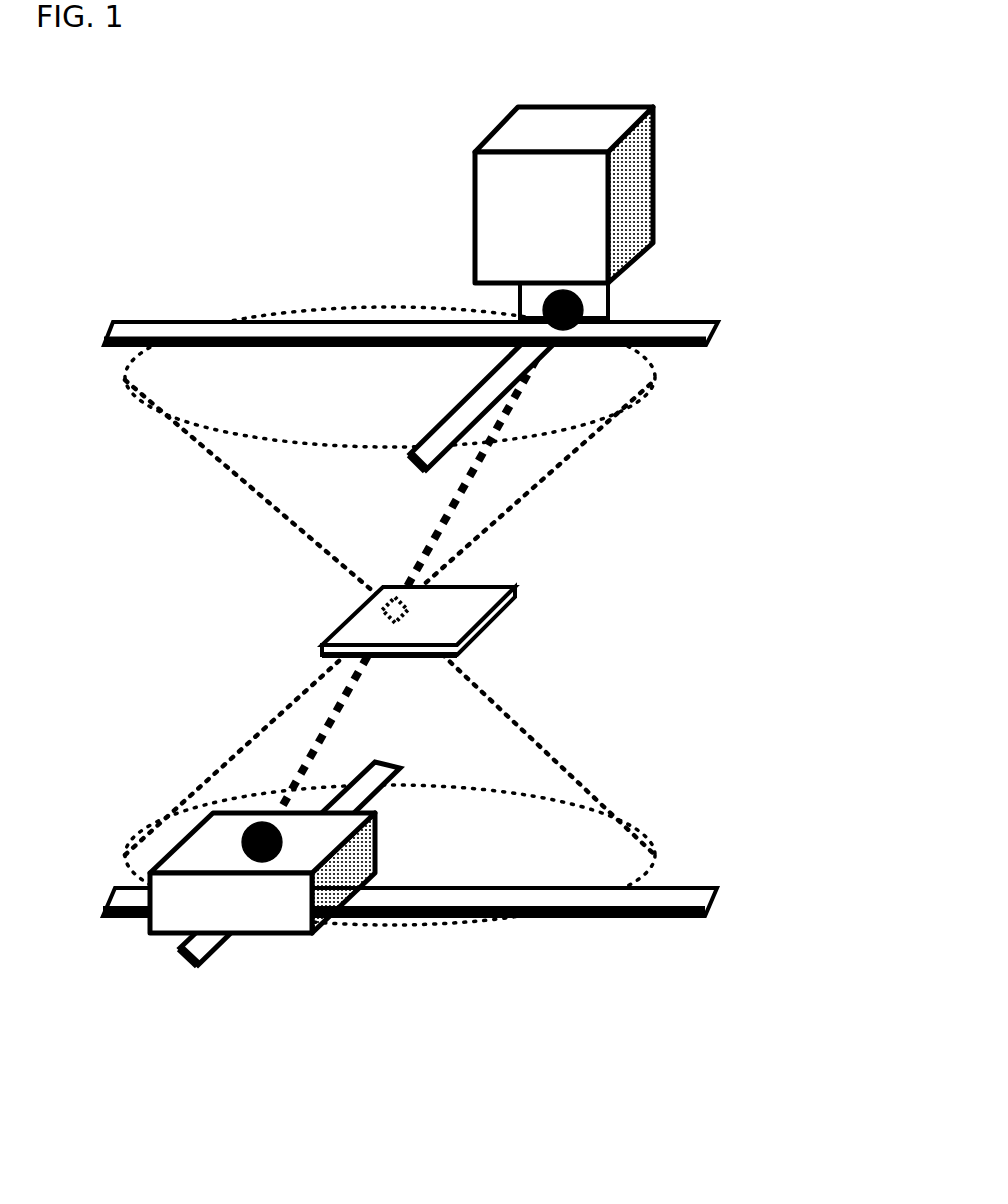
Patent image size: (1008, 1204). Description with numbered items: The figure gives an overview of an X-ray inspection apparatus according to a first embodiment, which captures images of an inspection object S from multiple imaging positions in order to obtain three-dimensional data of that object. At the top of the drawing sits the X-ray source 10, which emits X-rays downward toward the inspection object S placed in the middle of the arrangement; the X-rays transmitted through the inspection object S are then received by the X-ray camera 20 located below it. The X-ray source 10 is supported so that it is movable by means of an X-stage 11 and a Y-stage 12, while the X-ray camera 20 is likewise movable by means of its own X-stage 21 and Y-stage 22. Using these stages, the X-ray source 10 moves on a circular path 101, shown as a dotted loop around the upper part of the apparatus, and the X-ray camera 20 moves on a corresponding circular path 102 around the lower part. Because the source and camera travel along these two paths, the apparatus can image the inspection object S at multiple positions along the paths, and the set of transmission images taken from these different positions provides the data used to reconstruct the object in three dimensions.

The X-ray source 10 is at (663, 188).
The X-stage 11 is at (715, 323).
The Y-stage 12 is at (445, 417).
The circular path 101 is at (300, 308).
The inspection object S is at (360, 623).
The circular path 102 is at (523, 793).
The X-ray camera 20 is at (312, 933).
The X-stage 21 is at (715, 892).
The Y-stage 22 is at (215, 960).